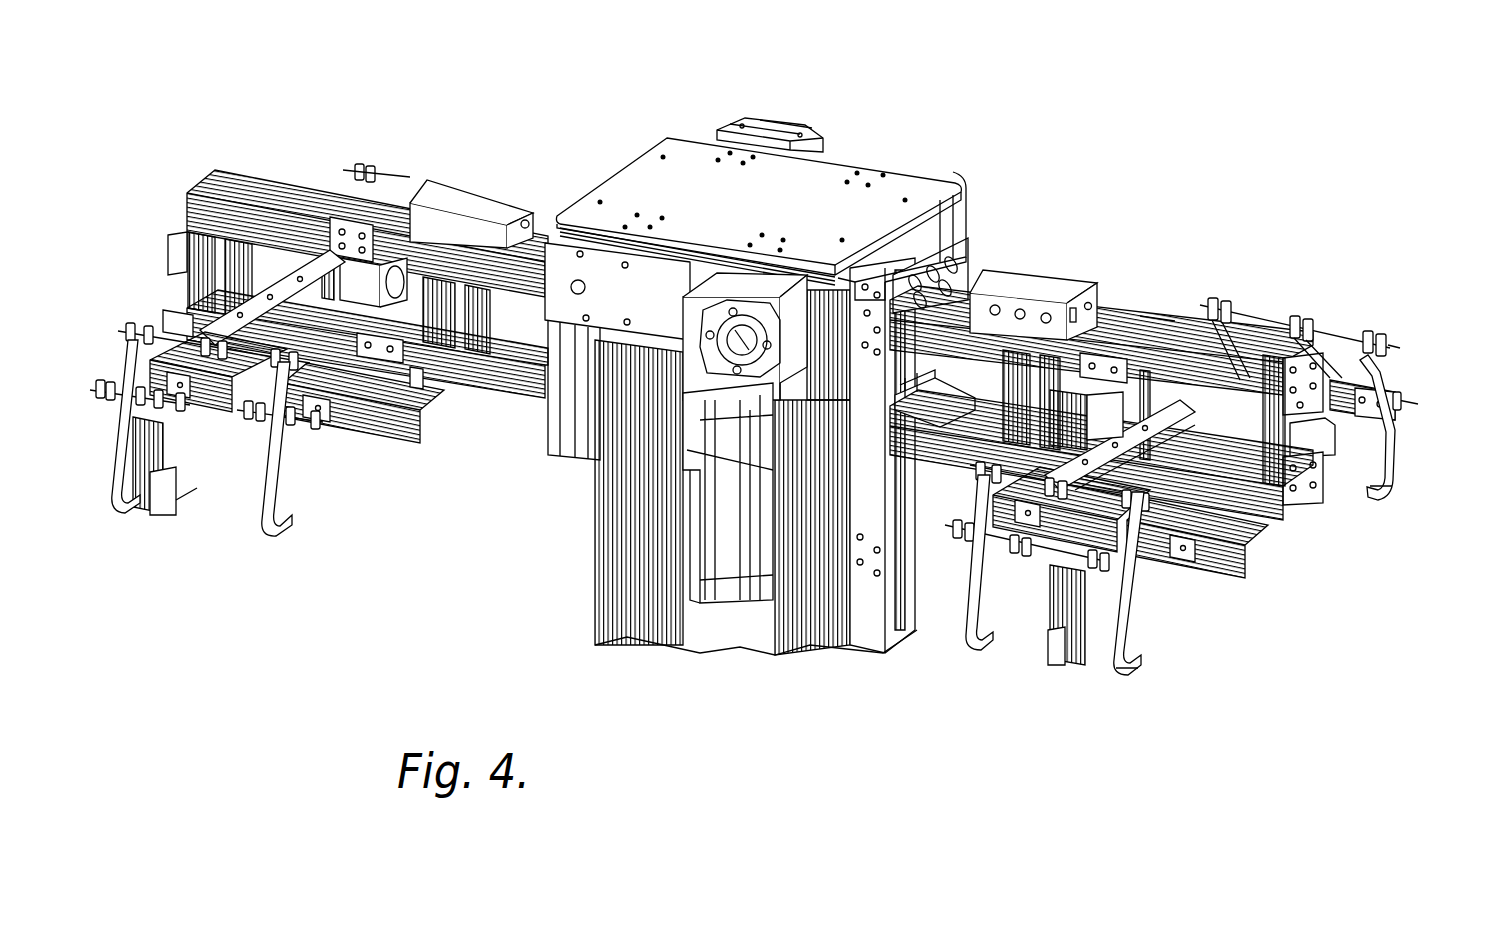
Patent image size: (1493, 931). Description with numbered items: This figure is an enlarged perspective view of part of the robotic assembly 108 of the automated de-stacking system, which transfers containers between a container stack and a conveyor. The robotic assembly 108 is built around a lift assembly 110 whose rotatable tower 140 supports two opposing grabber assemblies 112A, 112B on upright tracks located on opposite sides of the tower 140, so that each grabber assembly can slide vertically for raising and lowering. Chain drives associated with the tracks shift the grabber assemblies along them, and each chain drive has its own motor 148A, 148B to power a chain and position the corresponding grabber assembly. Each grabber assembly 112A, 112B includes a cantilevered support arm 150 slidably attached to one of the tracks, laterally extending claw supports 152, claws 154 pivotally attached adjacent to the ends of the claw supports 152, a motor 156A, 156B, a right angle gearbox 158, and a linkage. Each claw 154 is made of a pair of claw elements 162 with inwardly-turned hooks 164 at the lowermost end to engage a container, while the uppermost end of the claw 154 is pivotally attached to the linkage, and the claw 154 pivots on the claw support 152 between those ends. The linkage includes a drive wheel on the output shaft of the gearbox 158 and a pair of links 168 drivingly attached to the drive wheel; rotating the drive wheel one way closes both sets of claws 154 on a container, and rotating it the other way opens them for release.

The robotic assembly 108 is at (630, 104).
The lift assembly 110 is at (735, 107).
The grabber assembly 112A is at (1154, 412).
The grabber assembly 112B is at (384, 138).
The rotatable tower 140 is at (896, 150).
The motor 148A is at (716, 431).
The motor 148B is at (812, 116).
The cantilevered support arm 150 is at (1136, 311).
The claw support 152 is at (1243, 550).
The claw 154 is at (1374, 298).
The motor 156A is at (1101, 368).
The motor 156B is at (427, 168).
The right angle gearbox 158 is at (1156, 326).
The claw element 162 is at (1404, 486).
The inwardly-turned hook 164 is at (1372, 504).
The link 168 is at (1307, 310).